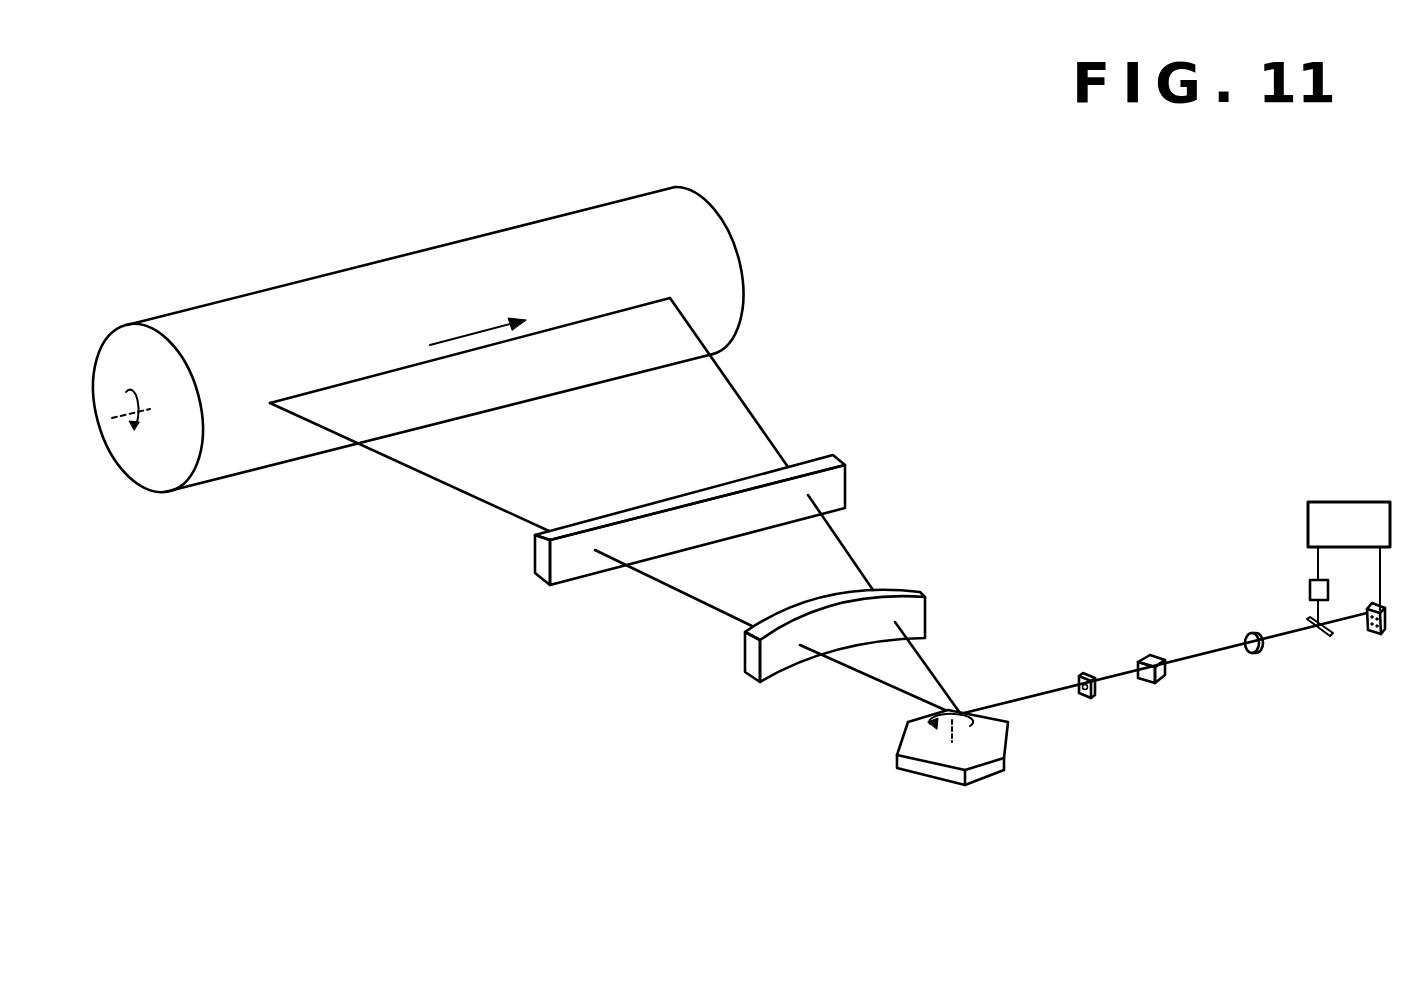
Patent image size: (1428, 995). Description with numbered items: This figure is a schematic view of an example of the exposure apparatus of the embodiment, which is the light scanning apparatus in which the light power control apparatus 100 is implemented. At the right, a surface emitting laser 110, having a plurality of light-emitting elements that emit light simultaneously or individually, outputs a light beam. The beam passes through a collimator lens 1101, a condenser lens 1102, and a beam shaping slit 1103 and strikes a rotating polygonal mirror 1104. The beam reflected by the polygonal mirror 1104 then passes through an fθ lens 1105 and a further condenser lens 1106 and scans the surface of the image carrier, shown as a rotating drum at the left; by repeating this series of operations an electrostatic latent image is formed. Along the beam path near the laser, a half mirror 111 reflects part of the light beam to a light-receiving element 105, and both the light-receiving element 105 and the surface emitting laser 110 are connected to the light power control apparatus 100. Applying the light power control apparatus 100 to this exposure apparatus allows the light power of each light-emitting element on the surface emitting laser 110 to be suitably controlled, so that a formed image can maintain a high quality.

The light power control apparatus 100 is at (1367, 501).
The light-receiving element 105 is at (1310, 587).
The surface emitting laser 110 is at (1381, 636).
The half mirror 111 is at (1322, 640).
The collimator lens 1101 is at (1252, 632).
The condenser lens 1102 is at (735, 181).
The beam shaping slit 1103 is at (1083, 673).
The rotating polygonal mirror 1104 is at (1008, 743).
The fθ lens 1105 is at (943, 566).
The condenser lens 1106 is at (862, 433).